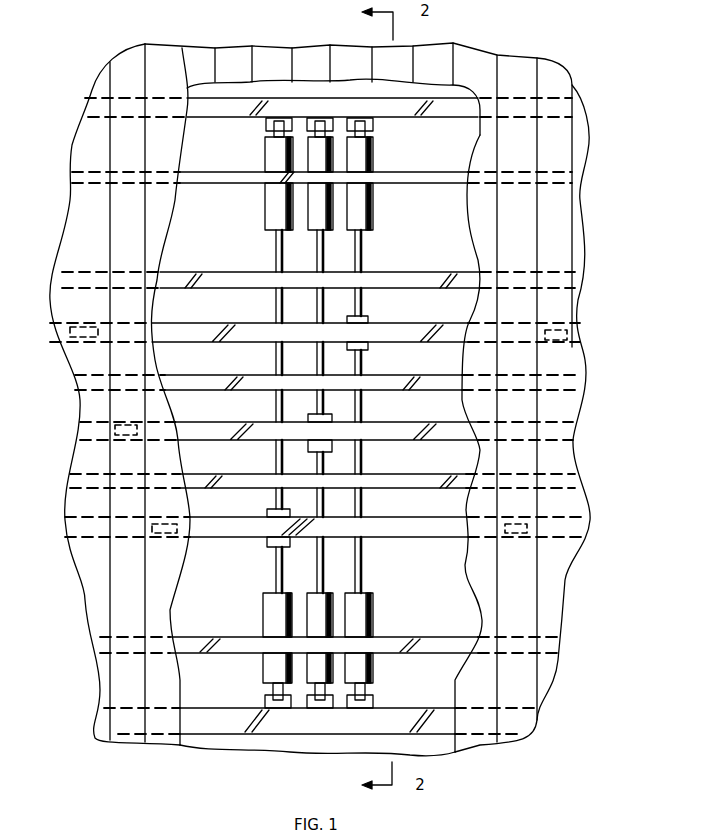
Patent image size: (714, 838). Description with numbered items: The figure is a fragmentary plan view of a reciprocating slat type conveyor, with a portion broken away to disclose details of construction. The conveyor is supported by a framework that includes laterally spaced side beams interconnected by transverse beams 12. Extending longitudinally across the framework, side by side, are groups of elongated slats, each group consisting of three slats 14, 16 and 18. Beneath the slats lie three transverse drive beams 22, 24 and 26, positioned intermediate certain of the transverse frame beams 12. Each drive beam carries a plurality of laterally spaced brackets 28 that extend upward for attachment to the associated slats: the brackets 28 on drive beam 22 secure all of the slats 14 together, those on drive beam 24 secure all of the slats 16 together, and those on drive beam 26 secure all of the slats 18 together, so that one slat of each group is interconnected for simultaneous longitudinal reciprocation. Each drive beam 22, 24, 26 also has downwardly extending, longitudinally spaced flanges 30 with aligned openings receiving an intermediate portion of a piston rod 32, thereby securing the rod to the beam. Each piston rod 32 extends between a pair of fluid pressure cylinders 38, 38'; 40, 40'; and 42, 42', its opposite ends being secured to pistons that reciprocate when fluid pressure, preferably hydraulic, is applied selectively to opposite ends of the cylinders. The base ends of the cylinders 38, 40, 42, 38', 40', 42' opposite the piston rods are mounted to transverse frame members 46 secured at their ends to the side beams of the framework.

The transverse beams 12 is at (432, 273).
The slat 14 is at (76, 212).
The slat 16 is at (125, 60).
The slat 18 is at (160, 52).
The transverse drive beam 22 is at (206, 330).
The transverse drive beam 24 is at (208, 432).
The transverse drive beam 26 is at (226, 526).
The brackets 28 is at (125, 437).
The flanges 30 is at (369, 318).
The piston rod 32 is at (316, 357).
The fluid pressure cylinder 38 is at (376, 650).
The fluid pressure cylinder 40 is at (326, 631).
The fluid pressure cylinder 42 is at (257, 650).
The fluid pressure cylinder 38' is at (379, 174).
The fluid pressure cylinder 40' is at (329, 189).
The fluid pressure cylinder 42' is at (256, 174).
The transverse frame members 46 is at (438, 118).